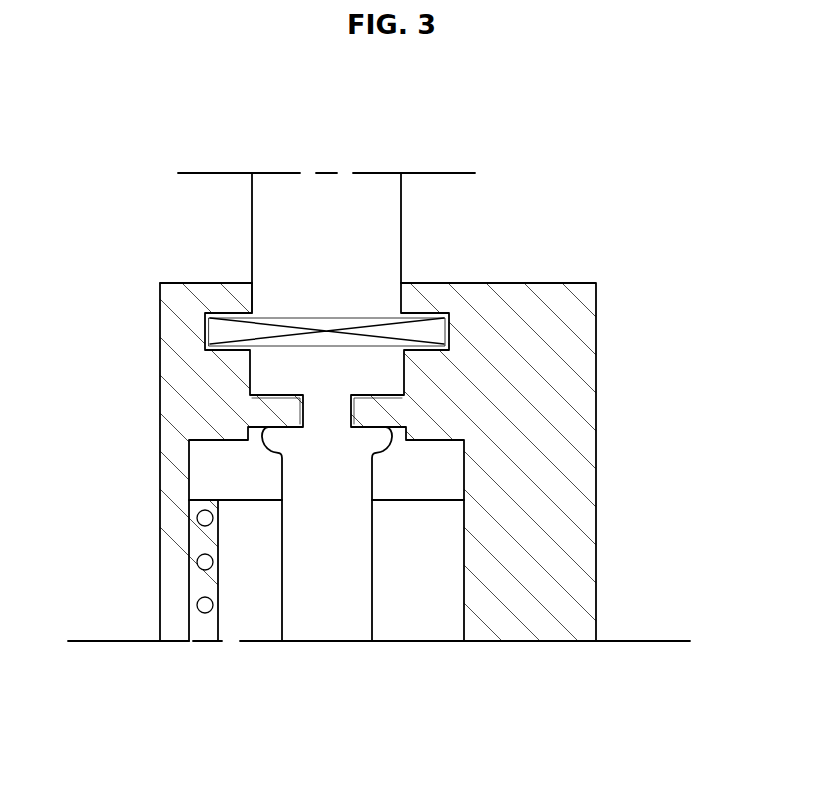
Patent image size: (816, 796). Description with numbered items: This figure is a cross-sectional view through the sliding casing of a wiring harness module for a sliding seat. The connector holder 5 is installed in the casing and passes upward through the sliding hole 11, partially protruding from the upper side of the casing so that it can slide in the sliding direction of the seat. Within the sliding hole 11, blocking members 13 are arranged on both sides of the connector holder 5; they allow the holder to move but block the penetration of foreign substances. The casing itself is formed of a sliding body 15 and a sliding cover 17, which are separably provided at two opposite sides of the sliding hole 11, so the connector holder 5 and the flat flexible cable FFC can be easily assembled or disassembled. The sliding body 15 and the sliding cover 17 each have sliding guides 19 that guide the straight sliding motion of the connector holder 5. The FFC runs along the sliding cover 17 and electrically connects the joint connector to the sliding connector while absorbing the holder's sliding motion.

The connector holder 5 is at (380, 215).
The sliding hole 11 is at (253, 298).
The blocking members 13 is at (272, 333).
The sliding body 15 is at (596, 336).
The sliding cover 17 is at (160, 514).
The sliding guides 19 is at (366, 406).
The flat flexible cable FFC is at (205, 626).